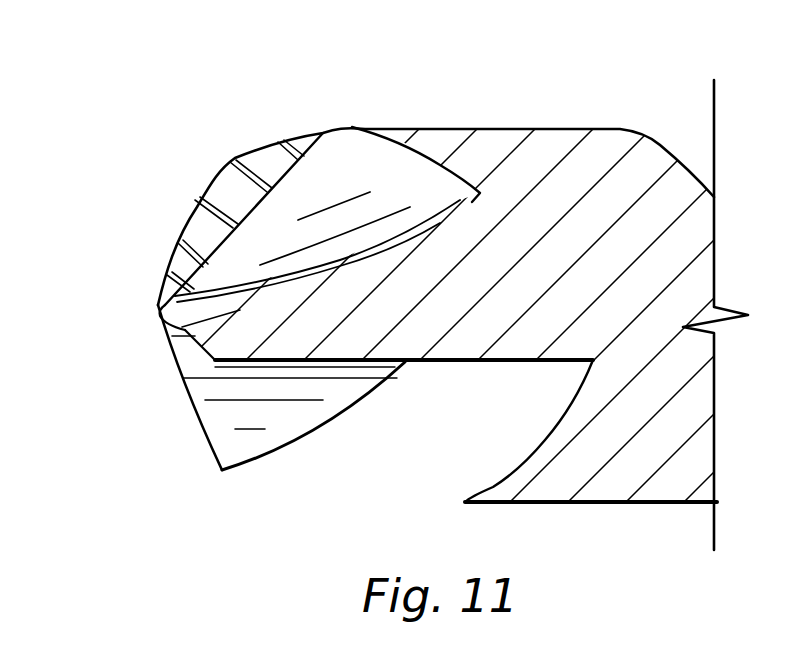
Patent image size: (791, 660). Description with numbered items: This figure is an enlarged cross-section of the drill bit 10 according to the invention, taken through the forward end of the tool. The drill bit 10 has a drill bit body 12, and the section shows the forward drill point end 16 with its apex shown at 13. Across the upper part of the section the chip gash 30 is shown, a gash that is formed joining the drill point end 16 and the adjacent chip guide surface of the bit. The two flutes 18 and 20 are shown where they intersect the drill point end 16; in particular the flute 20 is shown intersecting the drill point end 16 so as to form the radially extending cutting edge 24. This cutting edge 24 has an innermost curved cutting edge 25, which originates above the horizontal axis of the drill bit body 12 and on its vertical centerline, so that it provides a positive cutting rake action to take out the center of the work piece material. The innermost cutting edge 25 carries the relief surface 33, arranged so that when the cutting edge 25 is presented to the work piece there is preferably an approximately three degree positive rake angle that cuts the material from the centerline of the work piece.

The drill bit 10 is at (494, 118).
The drill bit body 12 is at (566, 128).
The apex 13 is at (157, 317).
The drill point end 16 is at (163, 332).
The flute 18 is at (342, 157).
The flute 20 is at (243, 448).
The cutting edge 24 is at (185, 417).
The radially innermost curved cutting edge portion 25 is at (168, 342).
The chip gash 30 is at (235, 190).
The relief surface 33 is at (165, 350).